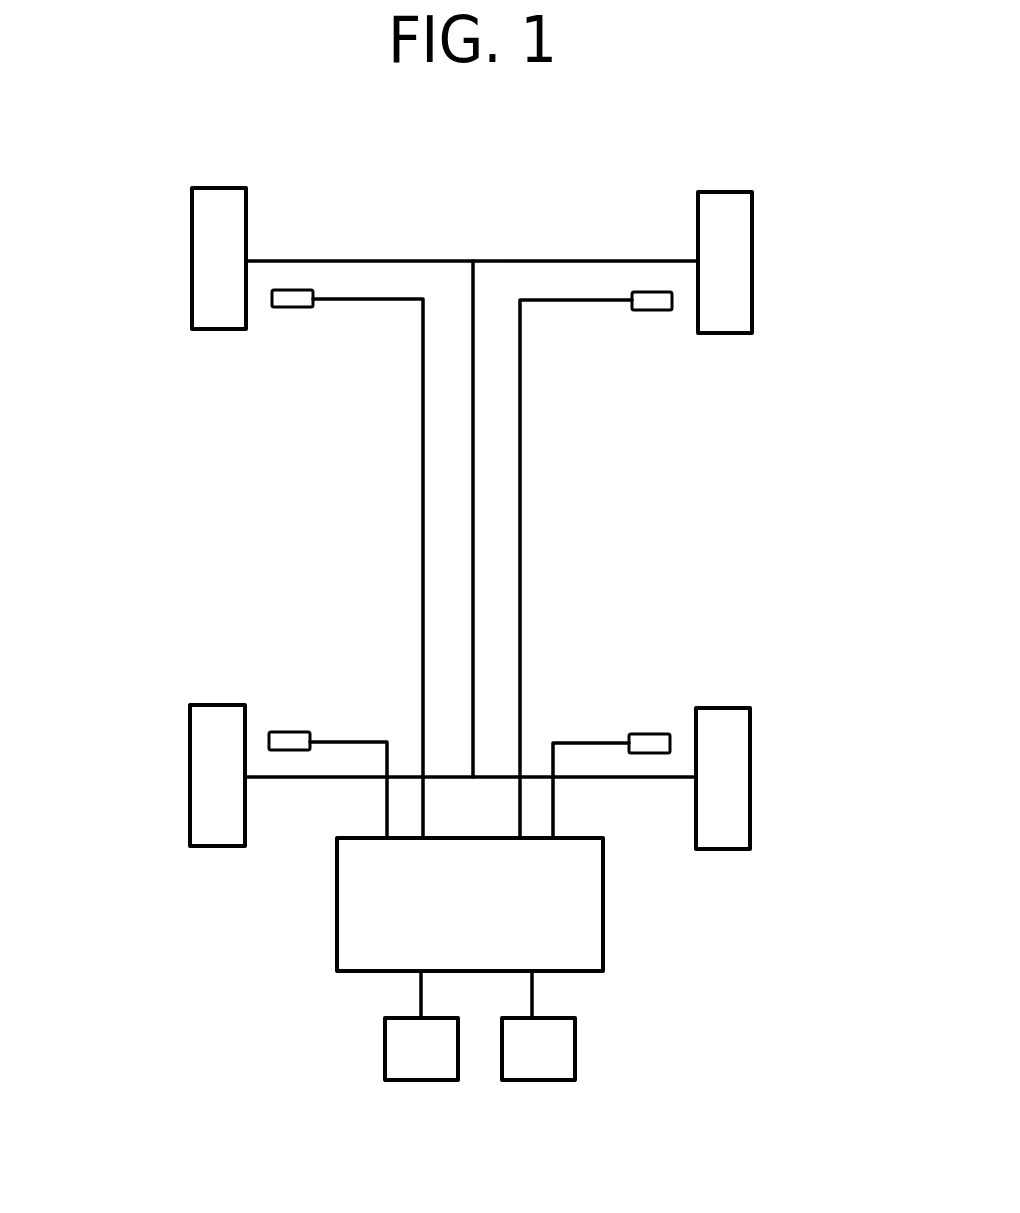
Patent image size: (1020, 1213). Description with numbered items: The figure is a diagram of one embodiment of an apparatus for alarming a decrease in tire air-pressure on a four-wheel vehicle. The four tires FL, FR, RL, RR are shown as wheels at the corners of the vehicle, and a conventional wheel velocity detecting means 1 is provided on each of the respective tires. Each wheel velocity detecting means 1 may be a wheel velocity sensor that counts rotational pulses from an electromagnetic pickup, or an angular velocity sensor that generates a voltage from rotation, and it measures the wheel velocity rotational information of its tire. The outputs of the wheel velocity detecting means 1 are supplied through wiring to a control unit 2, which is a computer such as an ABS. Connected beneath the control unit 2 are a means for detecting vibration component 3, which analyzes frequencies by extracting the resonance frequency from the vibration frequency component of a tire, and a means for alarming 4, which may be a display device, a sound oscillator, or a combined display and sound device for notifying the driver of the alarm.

The wheel velocity detecting means 1 is at (283, 299).
The control unit 2 is at (587, 951).
The means for detecting vibration component 3 is at (407, 1052).
The means for alarming 4 is at (548, 1059).
The front left tire FL is at (205, 228).
The front right tire FR is at (735, 237).
The rear left tire RL is at (205, 758).
The rear right tire RR is at (733, 765).